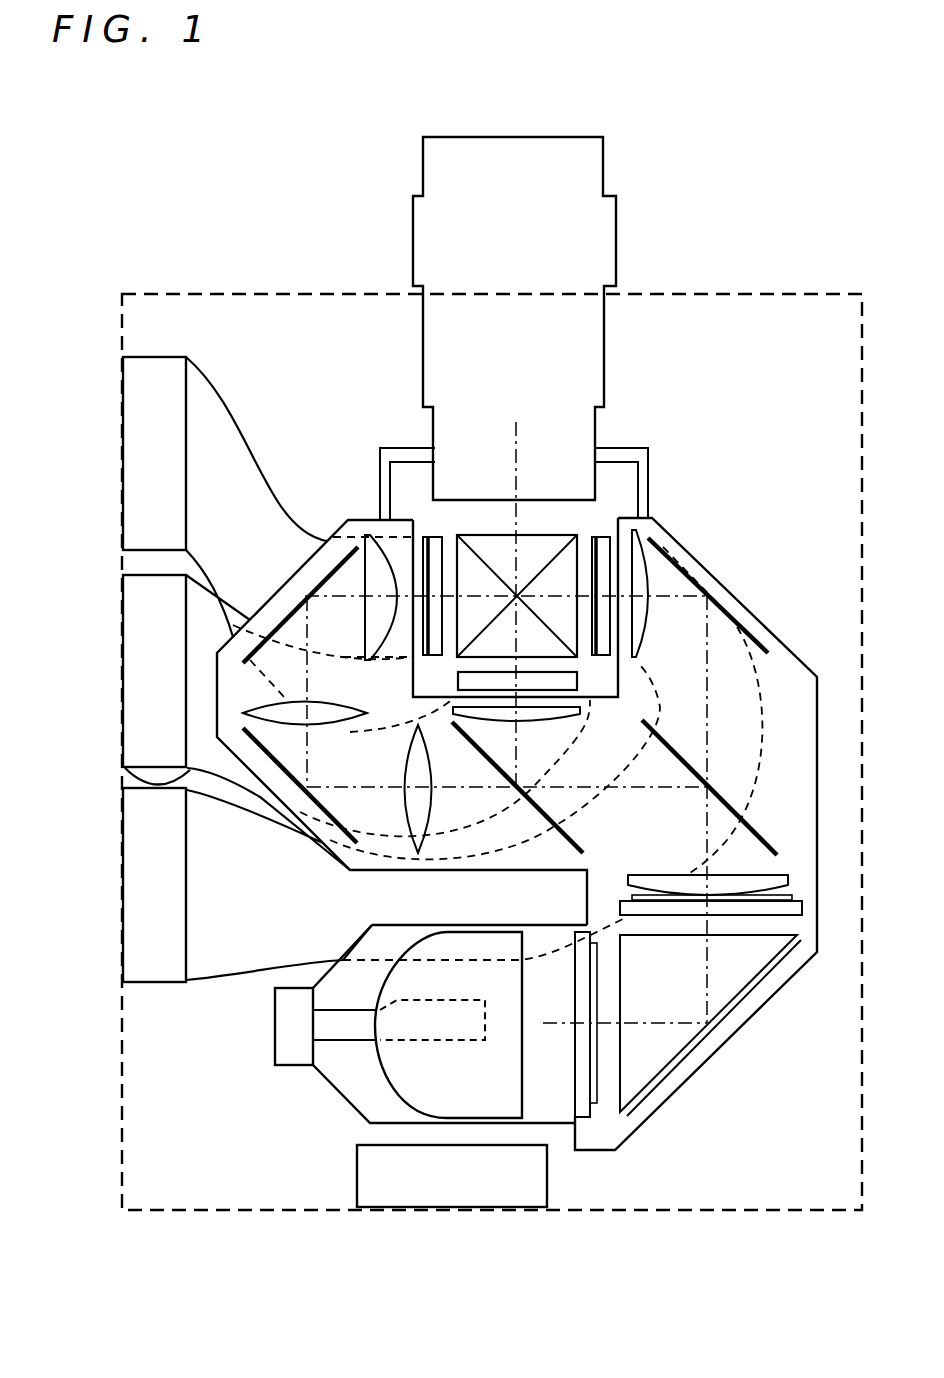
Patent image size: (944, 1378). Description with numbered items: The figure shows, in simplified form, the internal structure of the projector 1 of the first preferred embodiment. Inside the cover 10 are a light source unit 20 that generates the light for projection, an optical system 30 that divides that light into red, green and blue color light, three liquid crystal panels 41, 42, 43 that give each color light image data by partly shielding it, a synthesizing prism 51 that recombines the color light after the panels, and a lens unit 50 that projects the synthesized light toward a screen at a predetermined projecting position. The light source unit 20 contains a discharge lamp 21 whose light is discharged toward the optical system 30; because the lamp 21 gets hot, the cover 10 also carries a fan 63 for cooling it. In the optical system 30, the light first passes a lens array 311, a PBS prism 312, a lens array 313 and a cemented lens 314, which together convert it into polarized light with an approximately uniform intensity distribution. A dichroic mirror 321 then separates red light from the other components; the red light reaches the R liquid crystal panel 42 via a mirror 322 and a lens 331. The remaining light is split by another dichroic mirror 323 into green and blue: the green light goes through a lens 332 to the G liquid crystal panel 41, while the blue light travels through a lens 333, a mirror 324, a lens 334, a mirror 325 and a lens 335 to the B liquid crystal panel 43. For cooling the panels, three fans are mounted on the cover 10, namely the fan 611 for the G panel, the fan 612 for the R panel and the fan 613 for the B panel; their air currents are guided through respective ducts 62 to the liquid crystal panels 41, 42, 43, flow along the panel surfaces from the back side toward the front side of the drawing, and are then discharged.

The projector 1 is at (152, 150).
The cover 10 is at (282, 293).
The light source unit 20 is at (337, 1095).
The discharge lamp 21 is at (343, 1042).
The optical system 30 is at (332, 875).
The G liquid crystal panel 41 is at (577, 680).
The R liquid crystal panel 42 is at (600, 530).
The B liquid crystal panel 43 is at (433, 530).
The lens unit 50 is at (605, 355).
The synthesizing prism 51 is at (540, 533).
The duct 62 is at (242, 427).
The fan 63 is at (403, 1210).
The lens array 311 is at (585, 1123).
The PBS prism 312 is at (673, 1070).
The lens array 313 is at (803, 907).
The cemented lens 314 is at (663, 873).
The dichroic mirror 321 is at (723, 800).
The mirror 322 is at (683, 560).
The dichroic mirror 323 is at (533, 810).
The mirror 324 is at (290, 775).
The mirror 325 is at (315, 582).
The lens 331 is at (648, 612).
The lens 332 is at (533, 725).
The lens 333 is at (405, 770).
The lens 334 is at (317, 700).
The lens 335 is at (363, 573).
The fan for G panel 611 is at (123, 632).
The fan for R panel 612 is at (123, 848).
The fan for B panel 613 is at (122, 402).